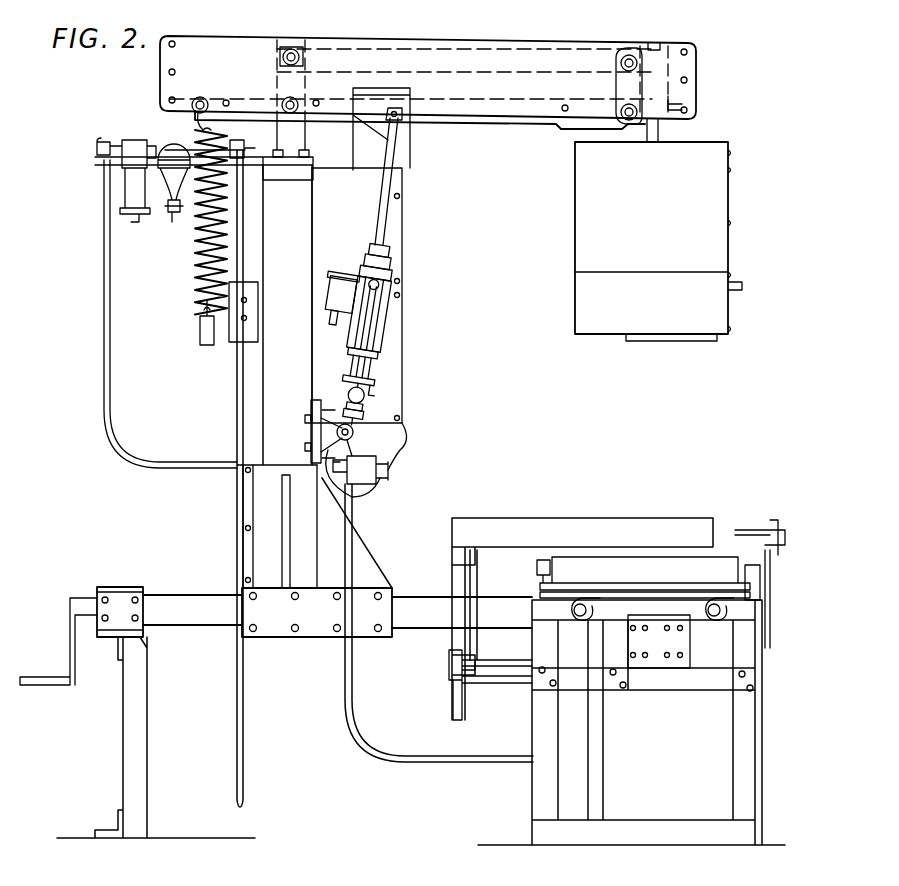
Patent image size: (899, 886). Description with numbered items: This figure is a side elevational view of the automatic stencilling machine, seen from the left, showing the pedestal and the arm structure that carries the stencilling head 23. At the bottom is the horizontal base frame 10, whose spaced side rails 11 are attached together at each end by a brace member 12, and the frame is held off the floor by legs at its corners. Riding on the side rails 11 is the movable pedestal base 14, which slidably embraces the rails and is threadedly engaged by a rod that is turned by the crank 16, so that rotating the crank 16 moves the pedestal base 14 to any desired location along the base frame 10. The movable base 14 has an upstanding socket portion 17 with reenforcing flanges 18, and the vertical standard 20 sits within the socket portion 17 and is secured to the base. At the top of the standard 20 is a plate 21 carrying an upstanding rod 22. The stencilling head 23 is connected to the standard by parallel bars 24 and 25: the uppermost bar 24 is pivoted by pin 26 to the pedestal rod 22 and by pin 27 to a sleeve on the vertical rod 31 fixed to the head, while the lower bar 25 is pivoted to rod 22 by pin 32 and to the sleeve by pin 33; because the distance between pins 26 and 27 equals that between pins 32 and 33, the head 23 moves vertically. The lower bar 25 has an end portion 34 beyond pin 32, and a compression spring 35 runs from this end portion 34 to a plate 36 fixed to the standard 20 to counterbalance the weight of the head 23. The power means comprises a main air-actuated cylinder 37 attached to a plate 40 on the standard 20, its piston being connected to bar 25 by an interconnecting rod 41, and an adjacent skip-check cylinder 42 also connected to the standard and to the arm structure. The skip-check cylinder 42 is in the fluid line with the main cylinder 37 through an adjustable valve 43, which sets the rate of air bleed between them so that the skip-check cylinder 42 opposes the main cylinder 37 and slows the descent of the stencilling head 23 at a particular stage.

The horizontal base frame 10 is at (186, 636).
The side rails 11 is at (163, 600).
The brace member 12 is at (110, 587).
The movable pedestal base 14 is at (286, 632).
The crank 16 is at (40, 686).
The upstanding socket portion 17 is at (258, 530).
The reenforcing flanges 18 is at (368, 566).
The vertical standard 20 is at (262, 408).
The plate 21 is at (298, 168).
The upstanding rod 22 is at (298, 118).
The stencilling head 23 is at (568, 236).
The uppermost bar 24 is at (470, 49).
The lower bar 25 is at (491, 118).
The pin 26 is at (294, 51).
The pin 27 is at (629, 55).
The vertical rod 31 is at (659, 132).
The pin 32 is at (287, 97).
The pin 33 is at (626, 121).
The end portion 34 is at (202, 96).
The compression spring 35 is at (199, 285).
The plate 36 is at (229, 340).
The main air-actuated cylinder 37 is at (380, 376).
The plate 40 is at (336, 420).
The interconnecting rod 41 is at (400, 183).
The skip-check cylinder 42 is at (381, 313).
The adjustable valve 43 is at (364, 404).